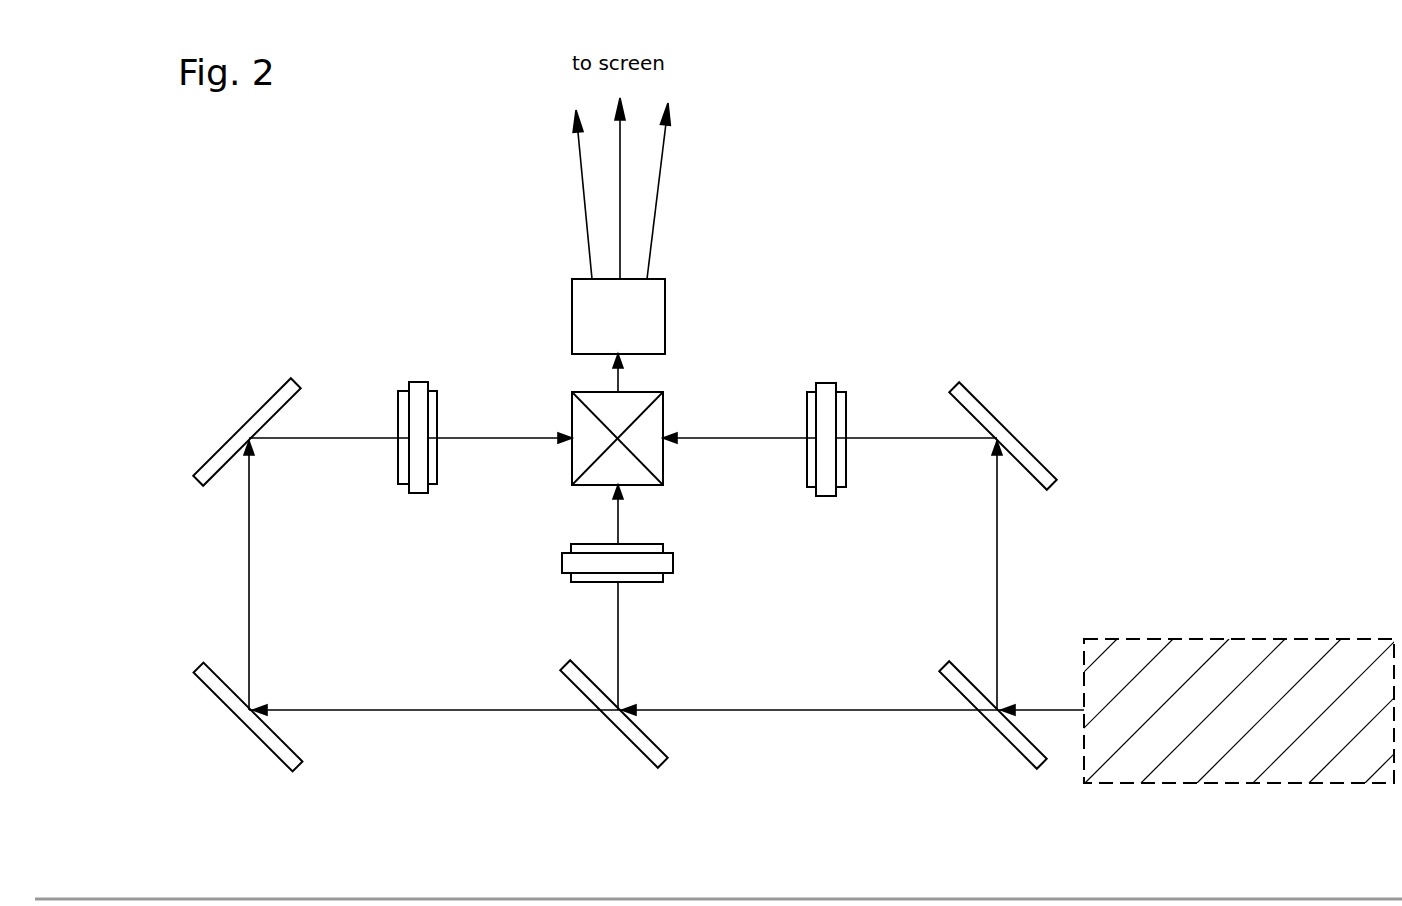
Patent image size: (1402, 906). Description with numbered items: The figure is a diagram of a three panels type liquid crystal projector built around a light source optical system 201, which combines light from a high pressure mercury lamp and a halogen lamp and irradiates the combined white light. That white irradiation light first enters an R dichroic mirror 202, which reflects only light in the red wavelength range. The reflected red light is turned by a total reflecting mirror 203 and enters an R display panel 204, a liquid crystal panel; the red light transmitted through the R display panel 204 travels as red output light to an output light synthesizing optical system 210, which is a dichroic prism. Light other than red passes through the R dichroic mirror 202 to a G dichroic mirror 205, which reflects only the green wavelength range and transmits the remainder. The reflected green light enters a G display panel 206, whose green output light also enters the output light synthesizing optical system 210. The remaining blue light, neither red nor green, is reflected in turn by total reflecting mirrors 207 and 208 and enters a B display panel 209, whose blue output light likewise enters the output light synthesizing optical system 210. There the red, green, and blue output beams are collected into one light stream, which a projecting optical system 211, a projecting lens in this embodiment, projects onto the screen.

The light source optical system 201 is at (1303, 640).
The R dichroic mirror 202 is at (990, 727).
The total reflecting mirror 203 is at (1013, 443).
The R display panel 204 is at (830, 390).
The G dichroic mirror 205 is at (620, 731).
The G display panel 206 is at (673, 562).
The total reflecting mirror 207 is at (223, 702).
The total reflecting mirror 208 is at (238, 436).
The B display panel 209 is at (417, 385).
The output light synthesizing optical system 210 is at (658, 392).
The projecting optical system 211 is at (665, 300).